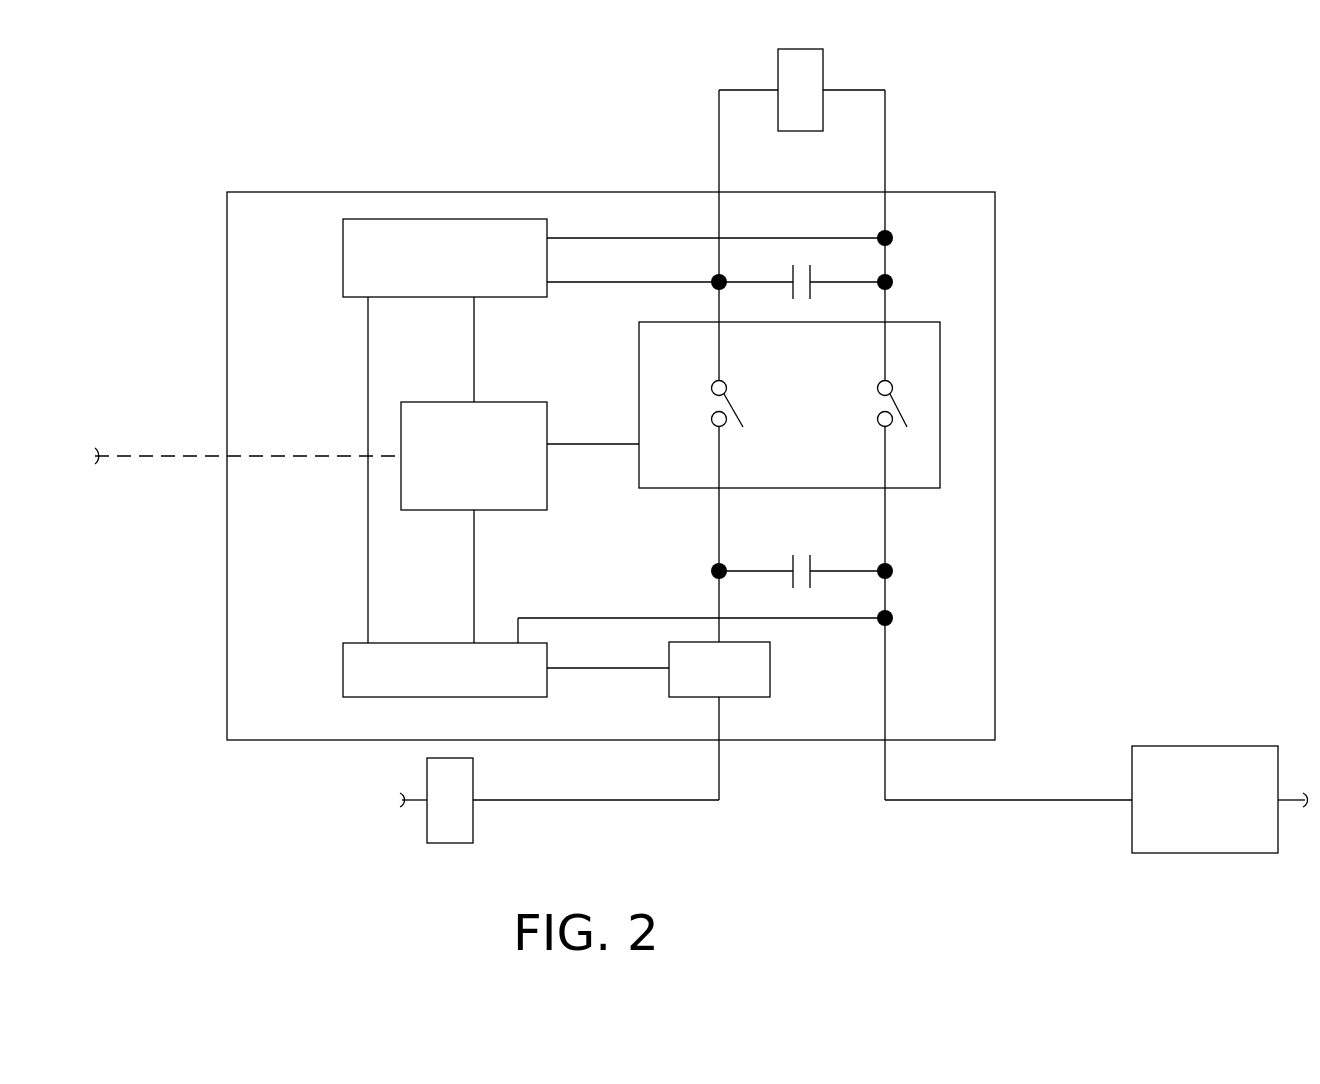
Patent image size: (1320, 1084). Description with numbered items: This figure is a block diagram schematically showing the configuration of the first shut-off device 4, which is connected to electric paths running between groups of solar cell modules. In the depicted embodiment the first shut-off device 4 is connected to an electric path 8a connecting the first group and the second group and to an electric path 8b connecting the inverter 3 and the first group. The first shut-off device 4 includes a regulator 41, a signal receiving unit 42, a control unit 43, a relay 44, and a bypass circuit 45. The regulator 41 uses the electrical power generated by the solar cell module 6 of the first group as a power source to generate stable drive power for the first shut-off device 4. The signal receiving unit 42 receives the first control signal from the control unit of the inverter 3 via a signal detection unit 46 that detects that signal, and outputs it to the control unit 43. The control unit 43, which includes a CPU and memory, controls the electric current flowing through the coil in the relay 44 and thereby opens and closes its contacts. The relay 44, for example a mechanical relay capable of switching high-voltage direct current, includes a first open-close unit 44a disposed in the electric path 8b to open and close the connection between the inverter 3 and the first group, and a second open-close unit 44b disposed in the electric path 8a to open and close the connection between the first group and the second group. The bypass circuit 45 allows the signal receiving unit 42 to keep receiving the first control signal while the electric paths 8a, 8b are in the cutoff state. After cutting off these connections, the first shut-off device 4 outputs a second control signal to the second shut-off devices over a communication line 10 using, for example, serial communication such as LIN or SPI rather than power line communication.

The inverter 3 is at (1207, 735).
The first shut-off device 4 is at (972, 182).
The solar cell module 6 is at (778, 63).
The electric path 8a is at (578, 800).
The electric path 8b is at (1037, 800).
The communication line 10 is at (142, 456).
The regulator 41 is at (343, 258).
The signal receiving unit 42 is at (343, 676).
The control unit 43 is at (401, 418).
The relay 44 is at (942, 454).
The first open-close unit 44a is at (903, 406).
The second open-close unit 44b is at (740, 398).
The bypass circuit 45 is at (830, 568).
The signal detection unit 46 is at (757, 697).